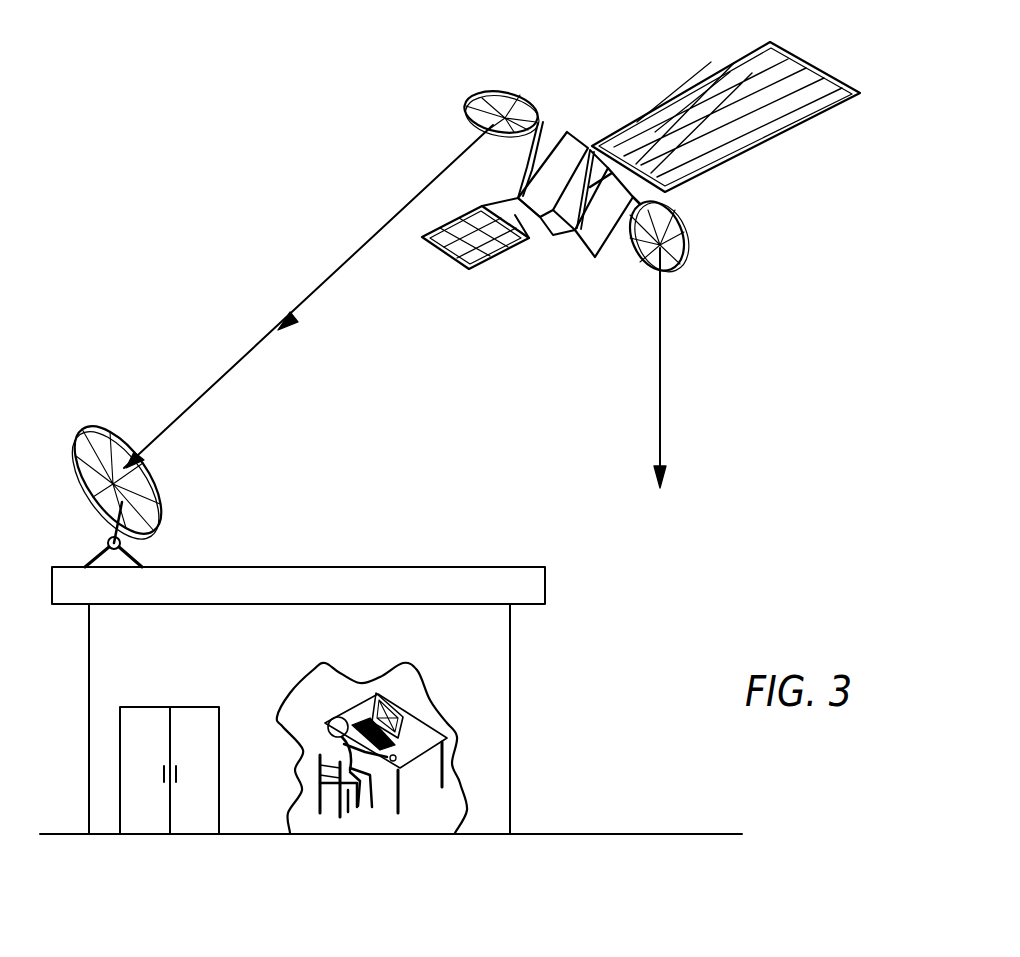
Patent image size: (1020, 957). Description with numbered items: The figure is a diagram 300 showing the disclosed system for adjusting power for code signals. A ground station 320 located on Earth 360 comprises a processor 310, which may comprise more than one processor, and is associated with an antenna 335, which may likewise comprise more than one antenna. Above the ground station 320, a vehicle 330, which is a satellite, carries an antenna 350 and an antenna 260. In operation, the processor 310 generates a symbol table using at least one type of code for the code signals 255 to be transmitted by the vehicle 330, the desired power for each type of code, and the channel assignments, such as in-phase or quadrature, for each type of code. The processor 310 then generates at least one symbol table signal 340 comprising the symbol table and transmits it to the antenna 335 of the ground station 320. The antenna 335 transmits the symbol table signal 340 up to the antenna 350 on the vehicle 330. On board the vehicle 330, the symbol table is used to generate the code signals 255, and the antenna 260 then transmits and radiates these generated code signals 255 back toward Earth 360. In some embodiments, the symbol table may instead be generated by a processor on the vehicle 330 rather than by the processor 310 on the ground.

The diagram 300 is at (668, 751).
The signals (code signals) 255 is at (660, 385).
The antenna 260 is at (688, 233).
The processor 310 is at (420, 717).
The ground station 320 is at (487, 647).
The vehicle (satellite) 330 is at (586, 134).
The antenna 335 is at (108, 446).
The symbol table signal 340 is at (279, 327).
The antenna 350 is at (500, 92).
The Earth 360 is at (551, 833).